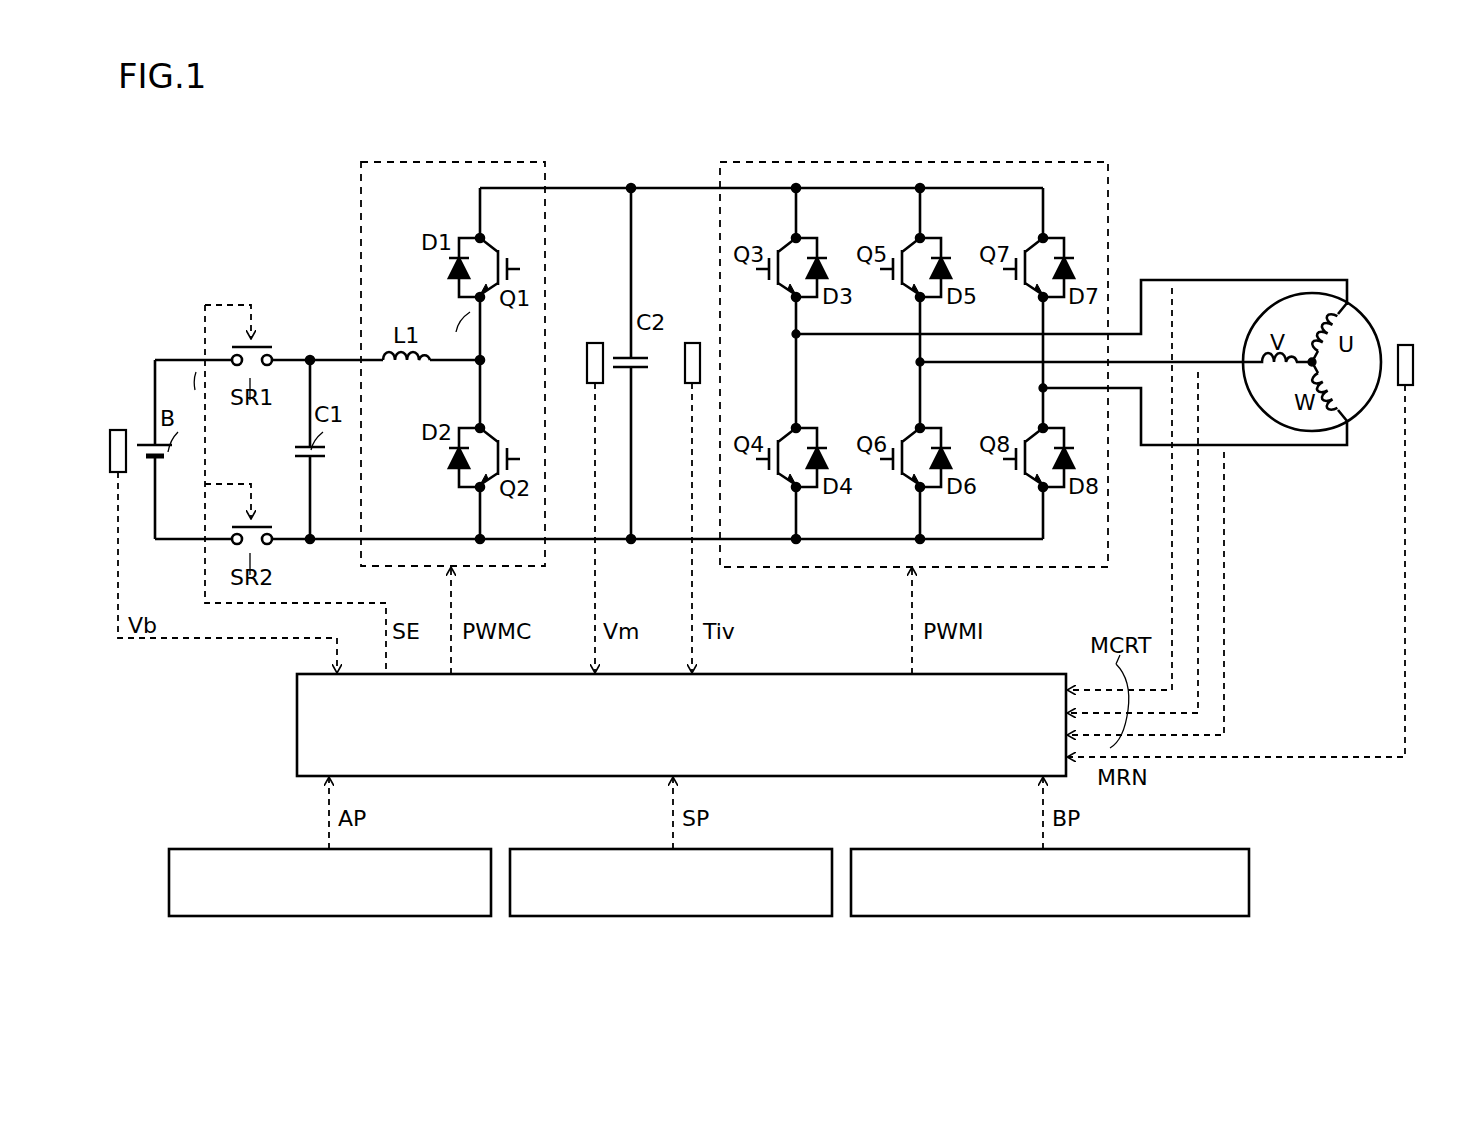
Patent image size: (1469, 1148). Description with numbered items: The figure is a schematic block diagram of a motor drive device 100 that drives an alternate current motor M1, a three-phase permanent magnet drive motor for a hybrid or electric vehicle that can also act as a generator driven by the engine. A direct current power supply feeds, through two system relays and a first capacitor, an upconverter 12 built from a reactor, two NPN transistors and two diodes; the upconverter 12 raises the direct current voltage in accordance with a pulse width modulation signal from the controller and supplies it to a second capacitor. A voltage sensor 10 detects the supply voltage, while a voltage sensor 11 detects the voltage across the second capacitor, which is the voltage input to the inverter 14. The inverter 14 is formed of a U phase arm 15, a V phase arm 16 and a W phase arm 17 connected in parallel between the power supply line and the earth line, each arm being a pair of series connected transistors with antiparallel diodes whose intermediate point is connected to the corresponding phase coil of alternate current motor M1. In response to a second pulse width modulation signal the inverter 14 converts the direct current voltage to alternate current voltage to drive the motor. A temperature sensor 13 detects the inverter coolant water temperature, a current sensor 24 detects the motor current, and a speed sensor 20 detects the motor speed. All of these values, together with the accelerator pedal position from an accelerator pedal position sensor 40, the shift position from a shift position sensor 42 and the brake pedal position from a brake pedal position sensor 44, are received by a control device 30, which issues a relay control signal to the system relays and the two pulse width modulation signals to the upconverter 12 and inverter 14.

The voltage sensor 10 is at (118, 430).
The voltage sensor 11 is at (594, 343).
The upconverter 12 is at (456, 162).
The temperature sensor 13 is at (692, 343).
The inverter 14 is at (1067, 162).
The U phase arm 15 is at (786, 346).
The V phase arm 16 is at (910, 374).
The W phase arm 17 is at (1033, 400).
The speed sensor 20 is at (1413, 365).
The current sensor 24 is at (1175, 291).
The control device 30 is at (297, 728).
The accelerator pedal position sensor 40 is at (433, 916).
The shift position sensor 42 is at (774, 916).
The brake pedal position sensor 44 is at (1191, 916).
The motor drive device 100 is at (781, 121).
The alternate current motor M1 is at (1368, 314).